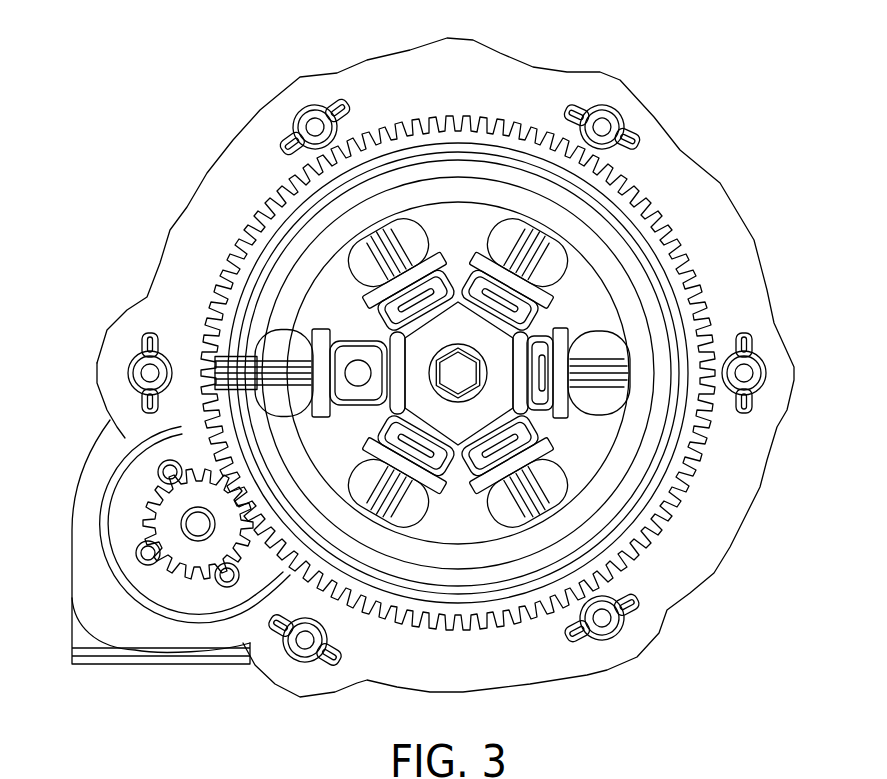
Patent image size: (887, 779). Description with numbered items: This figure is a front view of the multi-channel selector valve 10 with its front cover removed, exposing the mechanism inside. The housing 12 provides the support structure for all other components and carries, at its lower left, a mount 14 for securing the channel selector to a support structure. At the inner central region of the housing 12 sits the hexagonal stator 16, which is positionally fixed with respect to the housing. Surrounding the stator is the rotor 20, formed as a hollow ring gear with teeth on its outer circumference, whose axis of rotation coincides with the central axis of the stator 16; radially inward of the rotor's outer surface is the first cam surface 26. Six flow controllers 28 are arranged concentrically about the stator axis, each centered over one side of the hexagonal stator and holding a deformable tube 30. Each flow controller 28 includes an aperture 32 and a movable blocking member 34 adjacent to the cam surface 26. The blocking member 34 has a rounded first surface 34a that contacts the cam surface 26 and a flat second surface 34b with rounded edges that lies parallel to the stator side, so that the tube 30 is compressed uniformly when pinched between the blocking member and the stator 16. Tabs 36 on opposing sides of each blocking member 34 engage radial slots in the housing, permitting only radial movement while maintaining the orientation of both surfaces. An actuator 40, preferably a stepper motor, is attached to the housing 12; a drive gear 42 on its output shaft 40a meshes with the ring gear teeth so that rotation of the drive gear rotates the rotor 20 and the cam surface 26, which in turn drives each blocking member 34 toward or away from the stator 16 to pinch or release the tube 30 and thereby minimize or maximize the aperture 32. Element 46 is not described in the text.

The multi-channel selector valve 10 is at (128, 172).
The housing 12 is at (767, 487).
The mount 14 is at (167, 664).
The stator 16 is at (497, 347).
The rotor 20 is at (285, 173).
The first cam surface 26 is at (483, 208).
The flow controllers 28 is at (447, 520).
The deformable tube 30 is at (300, 290).
The blocking member 34 is at (566, 254).
The first surface 34a is at (258, 348).
The second surface 34b is at (328, 385).
The tab 36 is at (390, 240).
The drive gear 42 is at (130, 514).
The output shaft 40a is at (196, 524).
The actuator 40 is at (30, 771).
The aperture 32 is at (227, 771).
The fastener 46 is at (662, 771).